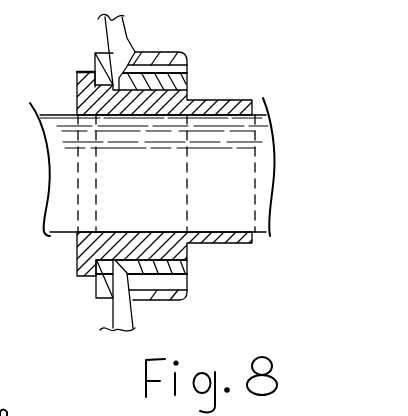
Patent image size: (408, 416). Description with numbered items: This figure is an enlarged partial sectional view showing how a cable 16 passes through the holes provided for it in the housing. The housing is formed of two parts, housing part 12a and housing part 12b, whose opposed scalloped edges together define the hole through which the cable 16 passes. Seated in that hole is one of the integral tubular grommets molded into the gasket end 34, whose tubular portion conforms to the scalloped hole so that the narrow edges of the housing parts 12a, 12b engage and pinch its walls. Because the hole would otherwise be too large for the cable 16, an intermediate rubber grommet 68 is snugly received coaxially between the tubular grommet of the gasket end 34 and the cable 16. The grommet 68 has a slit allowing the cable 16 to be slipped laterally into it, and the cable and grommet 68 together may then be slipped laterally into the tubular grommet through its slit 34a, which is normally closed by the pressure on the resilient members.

The cable 16 is at (62, 229).
The intermediate rubber grommet 68 is at (222, 101).
The gasket end 34 is at (183, 83).
The slit 34a is at (187, 268).
The housing part 12a is at (131, 46).
The housing part 12b is at (134, 300).